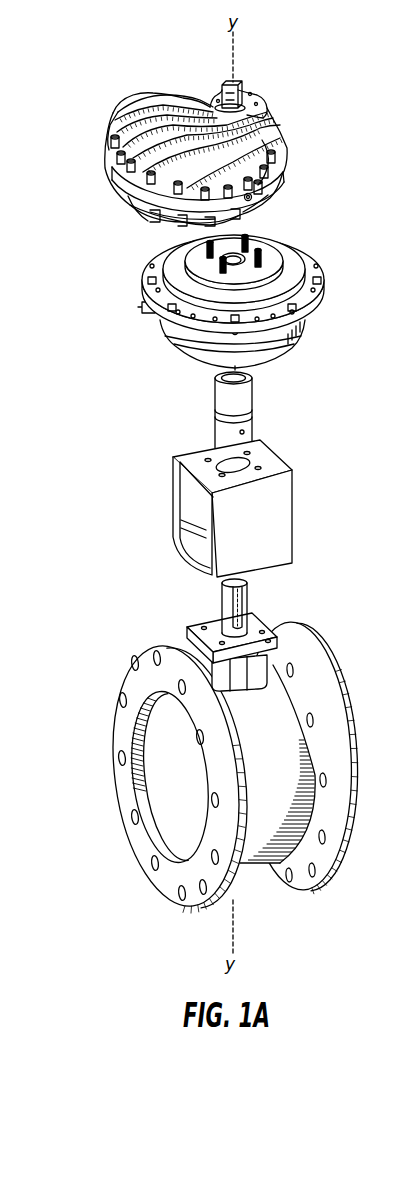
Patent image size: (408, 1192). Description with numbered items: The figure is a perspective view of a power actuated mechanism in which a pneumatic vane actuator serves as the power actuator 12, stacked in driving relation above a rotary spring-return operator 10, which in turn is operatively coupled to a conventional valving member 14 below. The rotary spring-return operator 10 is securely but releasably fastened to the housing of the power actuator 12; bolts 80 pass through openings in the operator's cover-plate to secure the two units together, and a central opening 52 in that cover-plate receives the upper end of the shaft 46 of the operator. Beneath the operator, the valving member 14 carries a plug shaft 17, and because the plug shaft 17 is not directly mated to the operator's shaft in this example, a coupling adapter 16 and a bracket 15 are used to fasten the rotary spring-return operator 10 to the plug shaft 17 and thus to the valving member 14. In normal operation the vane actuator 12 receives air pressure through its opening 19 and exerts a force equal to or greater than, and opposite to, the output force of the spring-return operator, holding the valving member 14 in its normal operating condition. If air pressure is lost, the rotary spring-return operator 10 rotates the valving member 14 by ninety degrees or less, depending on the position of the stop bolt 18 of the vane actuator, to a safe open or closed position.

The rotary spring-return operator 10 is at (208, 298).
The power actuator 12 is at (121, 82).
The valving member 14 is at (106, 822).
The bracket 15 is at (293, 508).
The coupling adapter 16 is at (213, 400).
The plug shaft 17 is at (222, 615).
The stop bolt of the vane actuator 18 is at (263, 188).
The opening of the vane actuator 19 is at (252, 199).
The shaft 46 is at (234, 264).
The central opening 52 is at (261, 257).
The bolts 80 is at (203, 253).